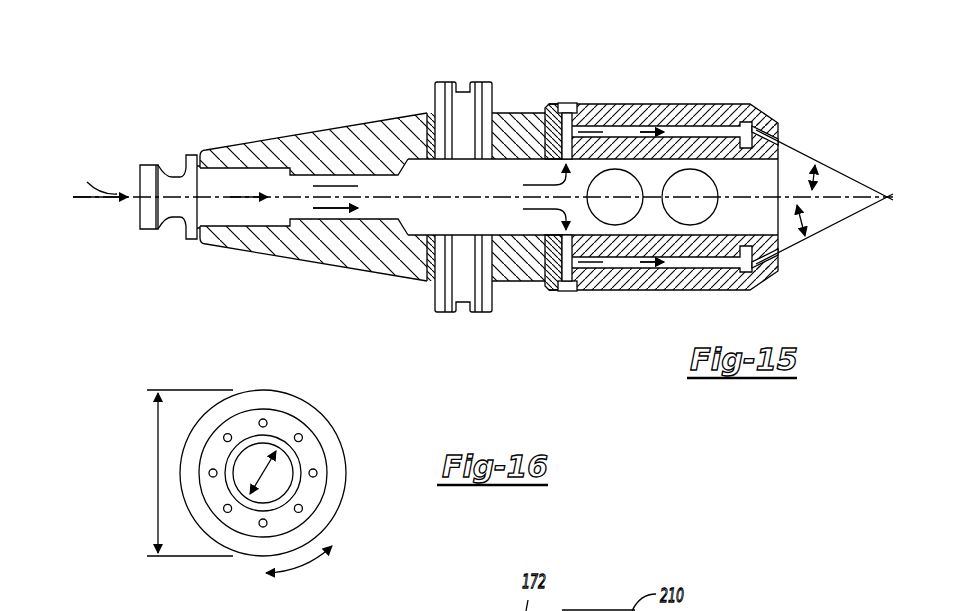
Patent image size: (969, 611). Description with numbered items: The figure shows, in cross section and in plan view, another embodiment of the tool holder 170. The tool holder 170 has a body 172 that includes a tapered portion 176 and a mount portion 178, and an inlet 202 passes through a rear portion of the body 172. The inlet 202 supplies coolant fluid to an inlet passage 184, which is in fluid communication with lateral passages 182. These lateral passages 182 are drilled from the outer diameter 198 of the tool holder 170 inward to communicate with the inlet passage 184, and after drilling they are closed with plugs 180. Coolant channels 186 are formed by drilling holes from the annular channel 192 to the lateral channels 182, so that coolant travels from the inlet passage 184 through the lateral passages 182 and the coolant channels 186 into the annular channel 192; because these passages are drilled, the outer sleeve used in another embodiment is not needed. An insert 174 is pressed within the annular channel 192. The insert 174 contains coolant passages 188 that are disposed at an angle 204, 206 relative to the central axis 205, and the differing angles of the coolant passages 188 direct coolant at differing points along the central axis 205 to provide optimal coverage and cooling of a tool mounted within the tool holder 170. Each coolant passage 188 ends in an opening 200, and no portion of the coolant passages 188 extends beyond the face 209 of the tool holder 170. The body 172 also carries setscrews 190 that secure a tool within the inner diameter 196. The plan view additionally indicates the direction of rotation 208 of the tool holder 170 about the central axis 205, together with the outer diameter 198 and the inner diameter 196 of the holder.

In FIG. 15, the tool holder 170 is at (758, 75).
In FIG. 15, the body 172 is at (503, 113).
In FIG. 16, the body 172 is at (323, 423).
In FIG. 15, the insert 174 is at (758, 270).
In FIG. 16, the insert 174 is at (280, 412).
In FIG. 15, the tapered portion 176 is at (292, 130).
In FIG. 15, the mount portion 178 is at (463, 76).
In FIG. 15, the plugs 180 is at (567, 108).
In FIG. 15, the lateral passages 182 is at (545, 137).
In FIG. 15, the inlet passage 184 is at (305, 210).
In FIG. 15, the coolant channels 186 is at (681, 128).
In FIG. 15, the coolant passages 188 is at (759, 128).
In FIG. 15, the setscrews 190 is at (690, 220).
In FIG. 15, the annular channel 192 is at (745, 272).
In FIG. 16, the inner diameter 196 is at (270, 477).
In FIG. 16, the outer diameter 198 is at (157, 473).
In FIG. 16, the opening 200 is at (320, 474).
In FIG. 15, the inlet 202 is at (124, 220).
In FIG. 15, the angle 204 is at (818, 176).
In FIG. 15, the central axis 205 is at (889, 200).
In FIG. 15, the angle 206 is at (800, 228).
In FIG. 16, the rotation direction 208 is at (303, 565).
In FIG. 15, the face 209 is at (804, 140).